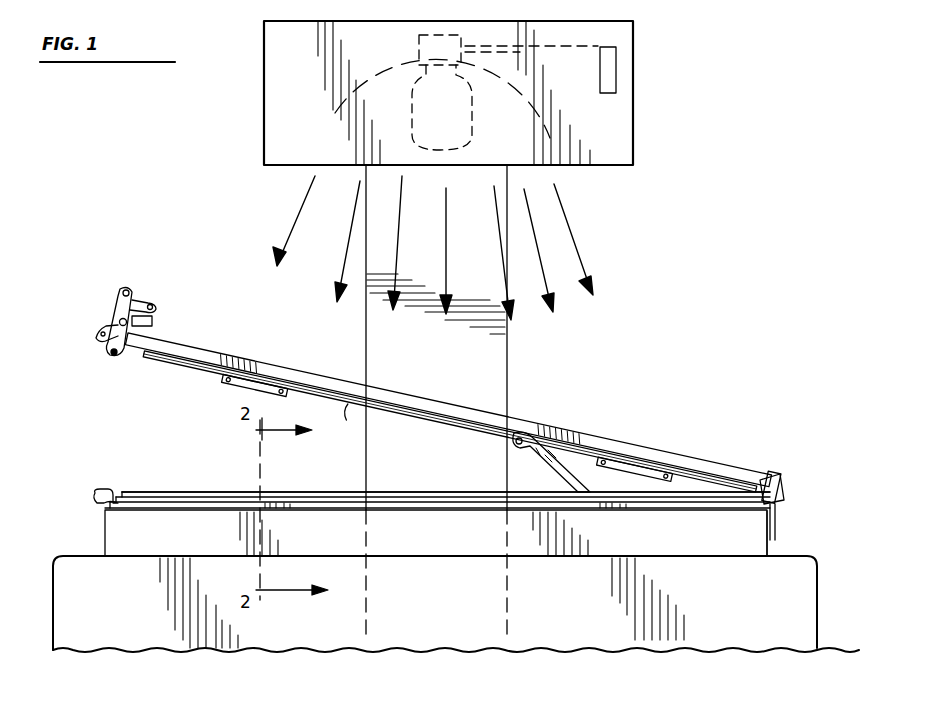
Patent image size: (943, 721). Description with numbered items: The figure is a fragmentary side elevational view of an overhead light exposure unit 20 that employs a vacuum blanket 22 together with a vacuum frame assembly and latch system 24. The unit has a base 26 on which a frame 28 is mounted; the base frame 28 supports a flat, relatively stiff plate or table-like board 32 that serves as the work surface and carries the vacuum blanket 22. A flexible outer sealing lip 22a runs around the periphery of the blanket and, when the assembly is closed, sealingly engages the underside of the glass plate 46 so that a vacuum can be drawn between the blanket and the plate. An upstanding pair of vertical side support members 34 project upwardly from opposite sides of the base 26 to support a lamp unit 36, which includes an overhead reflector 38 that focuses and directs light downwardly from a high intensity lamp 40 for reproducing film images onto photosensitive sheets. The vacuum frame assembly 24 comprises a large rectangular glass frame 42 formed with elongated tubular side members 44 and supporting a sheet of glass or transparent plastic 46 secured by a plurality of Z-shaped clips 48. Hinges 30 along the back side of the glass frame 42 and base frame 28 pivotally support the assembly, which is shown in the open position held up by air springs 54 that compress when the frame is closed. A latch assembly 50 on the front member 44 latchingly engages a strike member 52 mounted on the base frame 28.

The overhead light exposure unit 20 is at (670, 309).
The vacuum blanket 22 is at (432, 505).
The flexible outer sealing lip 22a is at (145, 492).
The vacuum frame assembly and latch system 24 is at (448, 434).
The base 26 is at (705, 630).
The frame 28 is at (622, 538).
The hinges 30 is at (778, 492).
The board 32 is at (178, 512).
The vertical side support members 34 is at (472, 372).
The lamp unit 36 is at (633, 110).
The overhead reflector 38 is at (320, 148).
The high intensity lamp 40 is at (466, 110).
The glass frame 42 is at (451, 396).
The tubular side members 44 is at (443, 453).
The glass plate 46 is at (347, 387).
The Z-shaped clips 48 is at (431, 431).
The latch assembly 50 is at (108, 312).
The strike member 52 is at (110, 488).
The air spring 54 is at (540, 470).